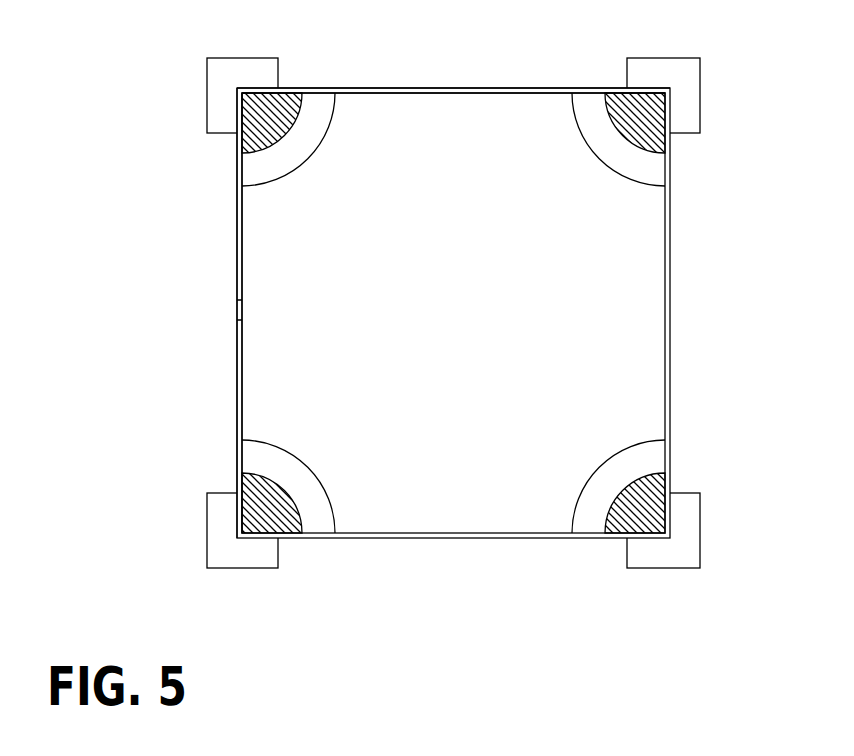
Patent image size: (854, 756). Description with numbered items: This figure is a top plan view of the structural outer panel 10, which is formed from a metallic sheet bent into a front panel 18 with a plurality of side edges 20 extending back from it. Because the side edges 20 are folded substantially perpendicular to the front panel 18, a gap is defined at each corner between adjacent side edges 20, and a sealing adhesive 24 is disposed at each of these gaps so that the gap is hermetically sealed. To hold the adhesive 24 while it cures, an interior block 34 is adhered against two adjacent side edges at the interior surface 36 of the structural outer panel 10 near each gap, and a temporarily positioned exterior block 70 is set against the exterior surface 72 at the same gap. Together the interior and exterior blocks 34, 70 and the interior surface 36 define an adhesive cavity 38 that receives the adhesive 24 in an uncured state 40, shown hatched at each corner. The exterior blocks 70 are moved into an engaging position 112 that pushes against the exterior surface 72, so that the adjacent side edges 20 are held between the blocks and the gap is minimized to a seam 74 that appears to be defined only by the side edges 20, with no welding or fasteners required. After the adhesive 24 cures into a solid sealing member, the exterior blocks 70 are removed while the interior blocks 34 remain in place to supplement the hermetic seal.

The structural outer panel 10 is at (404, 56).
The front panel 18 is at (602, 325).
The side edges 20 is at (237, 207).
The sealing adhesive 24 is at (619, 512).
The interior blocks 34 is at (320, 505).
The interior surface 36 is at (433, 93).
The adhesive cavity 38 is at (642, 134).
The uncured state 40 is at (286, 82).
The exterior blocks 70 is at (215, 80).
The exterior surface 72 is at (237, 310).
The seam 74 is at (674, 541).
The engaging position 112 is at (184, 533).